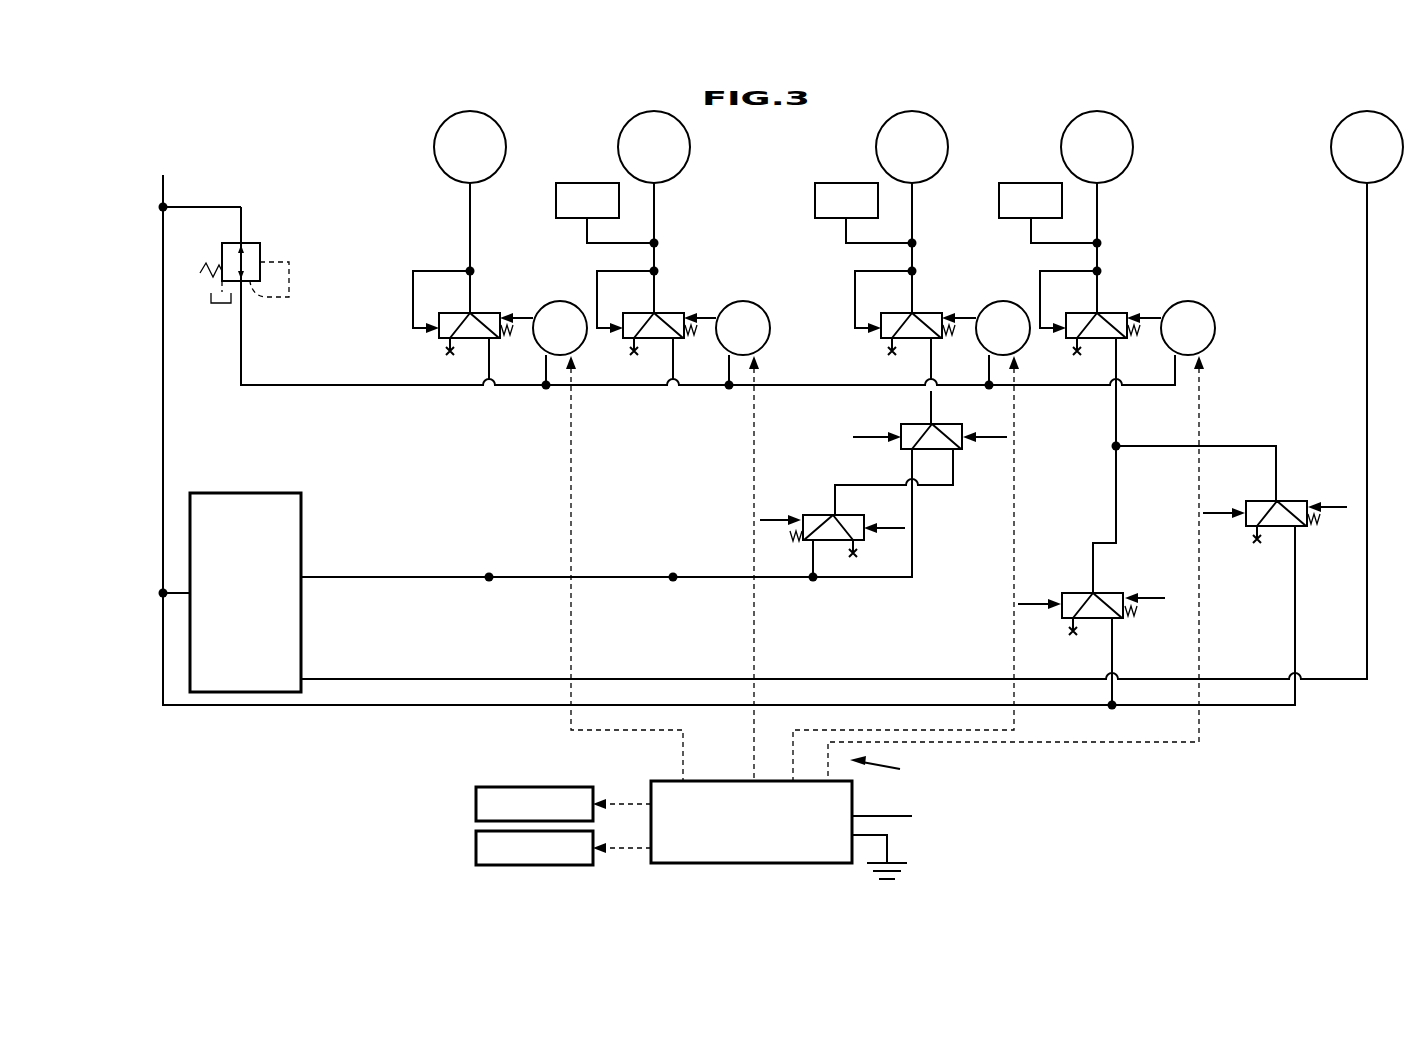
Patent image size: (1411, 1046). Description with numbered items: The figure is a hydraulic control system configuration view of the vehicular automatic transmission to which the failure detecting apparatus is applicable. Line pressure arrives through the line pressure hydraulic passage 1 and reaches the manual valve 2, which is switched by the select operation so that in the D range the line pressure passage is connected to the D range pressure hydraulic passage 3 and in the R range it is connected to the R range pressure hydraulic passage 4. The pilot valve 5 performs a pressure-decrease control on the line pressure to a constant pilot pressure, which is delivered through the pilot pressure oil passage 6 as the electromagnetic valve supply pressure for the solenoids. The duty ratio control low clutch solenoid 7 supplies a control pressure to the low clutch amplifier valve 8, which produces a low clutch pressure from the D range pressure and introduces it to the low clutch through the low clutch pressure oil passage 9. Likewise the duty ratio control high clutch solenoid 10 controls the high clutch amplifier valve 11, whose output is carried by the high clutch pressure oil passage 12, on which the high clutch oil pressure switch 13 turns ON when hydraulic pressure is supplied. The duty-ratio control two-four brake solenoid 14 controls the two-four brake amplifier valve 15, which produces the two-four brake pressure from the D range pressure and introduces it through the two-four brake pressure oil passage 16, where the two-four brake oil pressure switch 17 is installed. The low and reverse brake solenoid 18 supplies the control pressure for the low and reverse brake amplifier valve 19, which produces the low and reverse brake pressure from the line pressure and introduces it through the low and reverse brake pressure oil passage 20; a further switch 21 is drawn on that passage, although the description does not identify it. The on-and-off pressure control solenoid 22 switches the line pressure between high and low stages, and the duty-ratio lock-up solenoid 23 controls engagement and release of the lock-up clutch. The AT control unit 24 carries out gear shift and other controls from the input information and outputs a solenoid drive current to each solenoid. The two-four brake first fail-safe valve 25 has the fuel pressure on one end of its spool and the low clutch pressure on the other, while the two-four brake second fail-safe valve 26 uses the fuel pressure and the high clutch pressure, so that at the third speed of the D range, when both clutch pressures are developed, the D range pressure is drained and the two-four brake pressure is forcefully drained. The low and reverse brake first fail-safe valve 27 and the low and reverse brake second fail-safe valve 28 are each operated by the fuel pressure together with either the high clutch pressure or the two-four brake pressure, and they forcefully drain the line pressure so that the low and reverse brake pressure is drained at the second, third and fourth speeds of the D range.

The line pressure hydraulic passage 1 is at (164, 345).
The manual valve 2 is at (228, 493).
The D range pressure hydraulic passage 3 is at (603, 577).
The R range pressure hydraulic passage 4 is at (603, 679).
The pilot valve 5 is at (268, 243).
The pilot pressure oil passage 6 is at (240, 331).
The duty ratio control low clutch solenoid 7 is at (559, 300).
The low clutch amplifier valve 8 is at (437, 336).
The low clutch pressure oil passage 9 is at (468, 217).
The duty ratio control high clutch solenoid 10 is at (750, 300).
The high clutch amplifier valve 11 is at (622, 336).
The high clutch pressure oil passage 12 is at (663, 220).
The high clutch oil pressure switch 13 is at (567, 183).
The duty-ratio control 2-4 brake solenoid 14 is at (1000, 300).
The 2-4 brake amplifier valve 15 is at (880, 336).
The 2-4 brake pressure oil passage 16 is at (915, 220).
The 2-4 brake oil pressure switch 17 is at (822, 183).
The low & reverse brake solenoid 18 is at (1190, 300).
The low & reverse brake amplifier valve 19 is at (1065, 336).
The low & reverse brake pressure oil passage 20 is at (1100, 220).
The L&R/B pressure switch 21 is at (1007, 183).
The pressure control solenoid 22 is at (476, 797).
The duty-ratio lock-up solenoid 23 is at (476, 838).
The AT control unit 24 is at (660, 781).
The 2-4 brake first fail-safe valve 25 is at (963, 450).
The 2-4 brake second fail-safe valve 26 is at (815, 513).
The low-and-reverse brake first fail-safe valve 27 is at (1243, 530).
The low-and-reverse brake second fail-safe valve 28 is at (1074, 590).